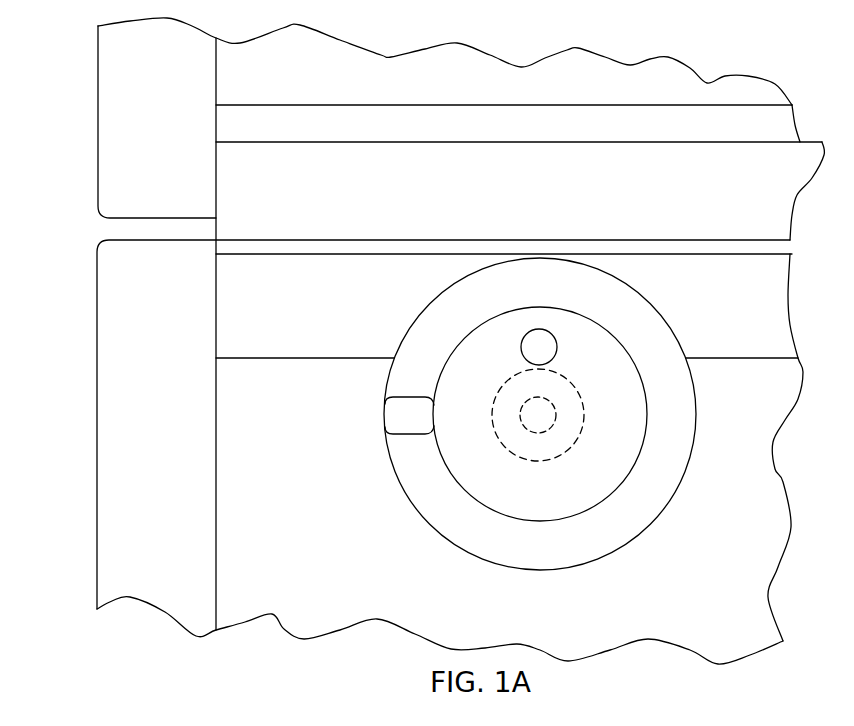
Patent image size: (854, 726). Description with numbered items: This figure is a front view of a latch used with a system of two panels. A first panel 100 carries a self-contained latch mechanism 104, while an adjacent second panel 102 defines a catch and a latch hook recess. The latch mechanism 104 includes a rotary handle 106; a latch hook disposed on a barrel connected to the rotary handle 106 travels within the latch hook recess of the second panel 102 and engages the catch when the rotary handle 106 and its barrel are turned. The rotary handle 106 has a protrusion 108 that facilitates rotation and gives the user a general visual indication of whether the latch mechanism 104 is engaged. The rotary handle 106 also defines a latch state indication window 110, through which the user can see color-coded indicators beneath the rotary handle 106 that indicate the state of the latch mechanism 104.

The first panel 100 is at (113, 377).
The second panel 102 is at (114, 155).
The latch mechanism 104 is at (419, 347).
The rotary handle 106 is at (610, 469).
The protrusion 108 is at (406, 417).
The latch state indication window 110 is at (541, 346).